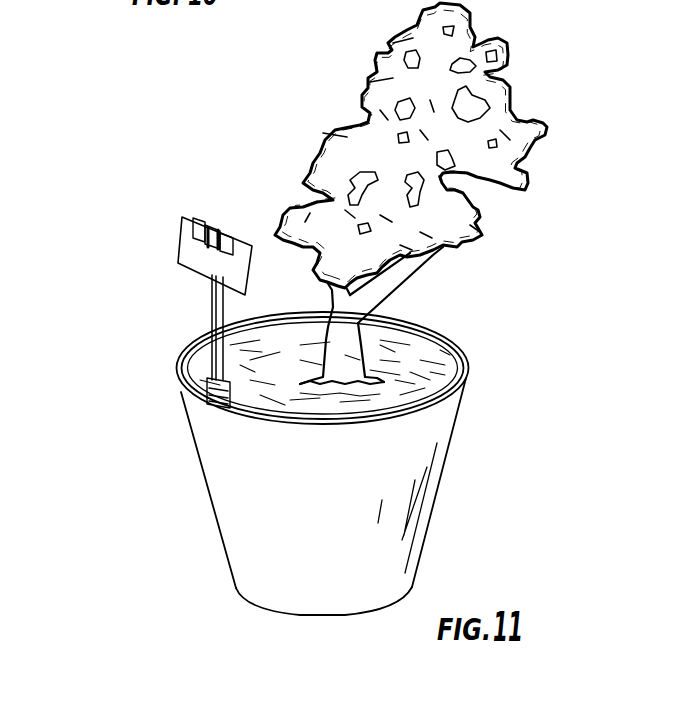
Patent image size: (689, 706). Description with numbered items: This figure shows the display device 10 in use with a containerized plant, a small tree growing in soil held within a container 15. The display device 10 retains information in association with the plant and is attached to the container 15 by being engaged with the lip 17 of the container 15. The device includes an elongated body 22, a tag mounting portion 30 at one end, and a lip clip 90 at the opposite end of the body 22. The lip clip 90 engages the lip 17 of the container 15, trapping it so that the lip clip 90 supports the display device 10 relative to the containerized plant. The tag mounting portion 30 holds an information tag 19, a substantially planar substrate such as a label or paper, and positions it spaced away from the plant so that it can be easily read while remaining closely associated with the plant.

The display device 10 is at (153, 223).
The container 15 is at (427, 467).
The lip 17 is at (465, 366).
The sign 19 is at (200, 262).
The body 22 is at (207, 307).
The tag mounting portion 30 is at (218, 218).
The lip clip 90 is at (175, 383).